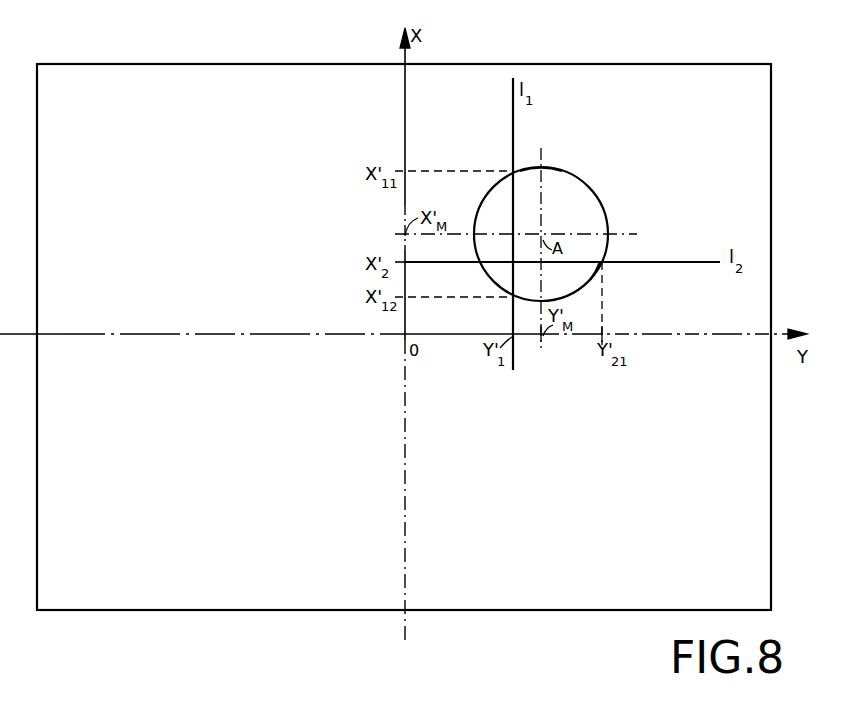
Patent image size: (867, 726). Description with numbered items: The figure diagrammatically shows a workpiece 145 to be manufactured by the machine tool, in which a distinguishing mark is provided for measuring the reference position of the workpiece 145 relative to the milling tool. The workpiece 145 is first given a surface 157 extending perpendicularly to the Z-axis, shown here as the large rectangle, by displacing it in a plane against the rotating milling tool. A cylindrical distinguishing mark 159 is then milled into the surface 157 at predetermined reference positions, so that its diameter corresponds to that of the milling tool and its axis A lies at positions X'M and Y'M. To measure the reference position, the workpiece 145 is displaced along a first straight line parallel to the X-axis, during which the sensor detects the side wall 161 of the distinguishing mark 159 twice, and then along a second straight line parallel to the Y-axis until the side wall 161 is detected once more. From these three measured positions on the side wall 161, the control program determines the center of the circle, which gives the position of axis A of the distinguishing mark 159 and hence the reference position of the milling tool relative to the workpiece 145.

The workpiece 145 is at (116, 611).
The surface 157 is at (752, 86).
The cylindrical distinguishing mark 159 is at (589, 207).
The side wall 161 is at (559, 172).